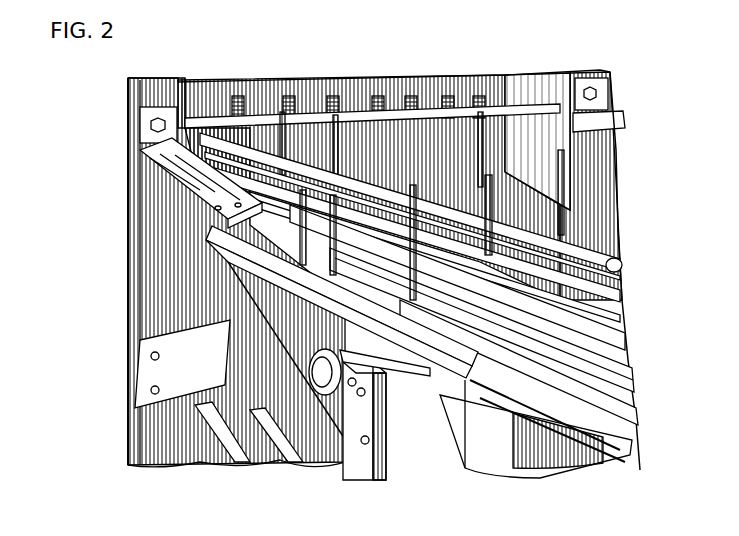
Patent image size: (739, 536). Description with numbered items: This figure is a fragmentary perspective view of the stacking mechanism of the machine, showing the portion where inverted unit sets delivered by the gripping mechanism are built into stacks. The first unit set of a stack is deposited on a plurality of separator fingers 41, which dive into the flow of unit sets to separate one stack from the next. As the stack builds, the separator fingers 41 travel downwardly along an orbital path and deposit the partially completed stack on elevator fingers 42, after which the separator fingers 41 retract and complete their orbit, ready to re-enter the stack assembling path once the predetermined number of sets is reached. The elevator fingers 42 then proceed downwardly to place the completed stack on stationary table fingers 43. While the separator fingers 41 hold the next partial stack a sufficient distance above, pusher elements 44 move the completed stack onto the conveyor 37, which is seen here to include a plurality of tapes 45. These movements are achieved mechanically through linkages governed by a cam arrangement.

The conveyor 37 is at (626, 296).
The separator fingers 41 is at (481, 183).
The elevator fingers 42 is at (355, 388).
The stationary table fingers 43 is at (338, 405).
The pusher elements 44 is at (492, 180).
The tapes 45 is at (622, 345).